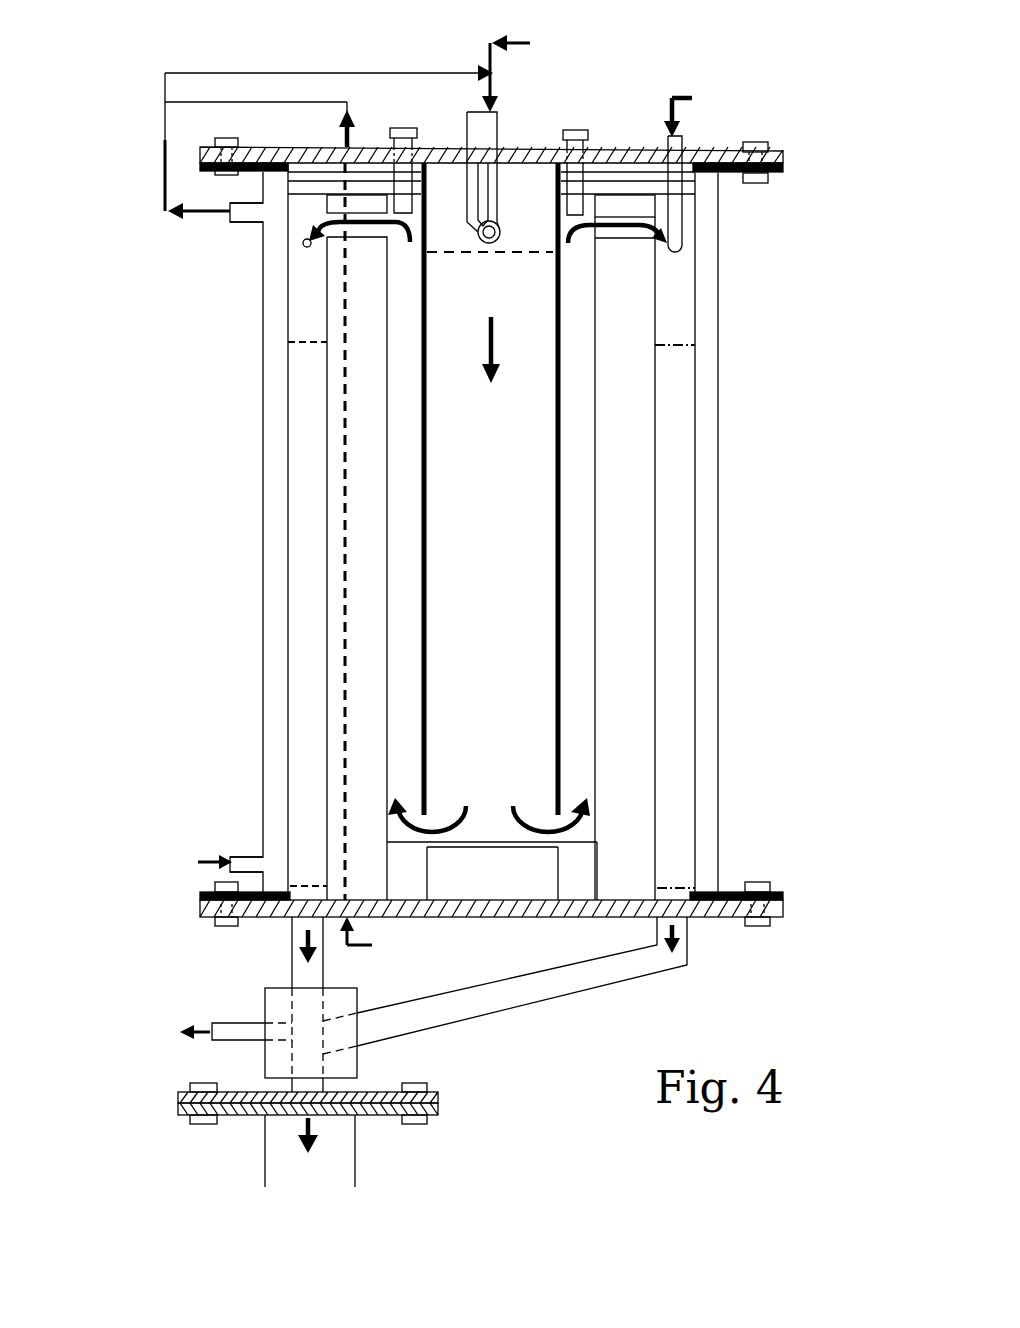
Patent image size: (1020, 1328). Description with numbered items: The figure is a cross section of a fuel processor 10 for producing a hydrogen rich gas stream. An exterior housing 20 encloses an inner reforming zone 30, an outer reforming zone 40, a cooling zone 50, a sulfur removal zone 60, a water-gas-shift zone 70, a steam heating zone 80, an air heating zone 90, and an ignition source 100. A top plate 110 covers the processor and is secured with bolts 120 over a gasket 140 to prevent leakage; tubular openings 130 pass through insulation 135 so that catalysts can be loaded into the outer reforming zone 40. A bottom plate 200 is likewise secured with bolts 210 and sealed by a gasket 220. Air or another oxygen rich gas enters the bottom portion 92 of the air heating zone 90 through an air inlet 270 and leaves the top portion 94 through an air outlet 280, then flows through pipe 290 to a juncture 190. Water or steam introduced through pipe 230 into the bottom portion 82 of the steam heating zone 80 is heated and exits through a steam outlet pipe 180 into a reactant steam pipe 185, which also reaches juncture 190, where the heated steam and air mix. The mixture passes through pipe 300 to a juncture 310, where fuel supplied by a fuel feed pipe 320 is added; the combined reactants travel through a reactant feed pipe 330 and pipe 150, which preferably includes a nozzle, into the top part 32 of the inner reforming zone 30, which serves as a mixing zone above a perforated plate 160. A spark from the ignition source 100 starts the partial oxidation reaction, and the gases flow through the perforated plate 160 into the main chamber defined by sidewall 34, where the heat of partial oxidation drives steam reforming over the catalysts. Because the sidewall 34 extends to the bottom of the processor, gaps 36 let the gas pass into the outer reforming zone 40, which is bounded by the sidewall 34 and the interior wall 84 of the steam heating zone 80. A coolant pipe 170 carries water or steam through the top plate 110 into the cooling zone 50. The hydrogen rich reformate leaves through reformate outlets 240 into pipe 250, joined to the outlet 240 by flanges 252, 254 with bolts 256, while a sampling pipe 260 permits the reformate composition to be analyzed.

The fuel processor 10 is at (205, 590).
The exterior housing 20 is at (718, 500).
The inner reforming zone 30 is at (533, 566).
The top part of inner reforming zone 32 is at (528, 220).
The sidewall of inner reforming zone 34 is at (558, 778).
The gaps 36 is at (597, 832).
The outer reforming zone 40 is at (582, 630).
The cooling zone 50 is at (298, 217).
The sulfur removal zone 60 is at (298, 307).
The water-gas-shift zone 70 is at (298, 615).
The steam heating zone 80 is at (630, 455).
The bottom portion of steam heating zone 82 is at (367, 873).
The interior wall of steam heating zone 84 is at (597, 697).
The air heating zone 90 is at (270, 720).
The bottom portion of air heating zone 92 is at (275, 822).
The top portion of air heating zone 94 is at (268, 263).
The ignition source 100 is at (468, 115).
The top plate 110 is at (783, 158).
The bolts 120 is at (752, 142).
The tubular openings 130 is at (396, 128).
The insulation 135 is at (625, 168).
The gasket 140 is at (783, 168).
The pipe 150 is at (500, 130).
The perforated plate 160 is at (517, 258).
The coolant pipe 170 is at (705, 169).
The steam outlet pipe 180 is at (348, 113).
The reactant steam pipe 185 is at (245, 100).
The juncture 190 is at (185, 98).
The bottom plate 200 is at (783, 910).
The bolts 210 is at (757, 882).
The gasket 220 is at (783, 892).
The pipe 230 is at (382, 939).
The reformate outlets 240 is at (292, 935).
The pipe 250 is at (355, 1168).
The flange 252 is at (438, 1098).
The flange 254 is at (438, 1110).
The bolts 256 is at (412, 1083).
The sampling pipe 260 is at (243, 1033).
The air inlet 270 is at (206, 862).
The air outlet 280 is at (240, 224).
The pipe 290 is at (165, 180).
The pipe 300 is at (303, 70).
The juncture 310 is at (487, 70).
The fuel feed pipe 320 is at (530, 43).
The reactant feed pipe 330 is at (495, 80).